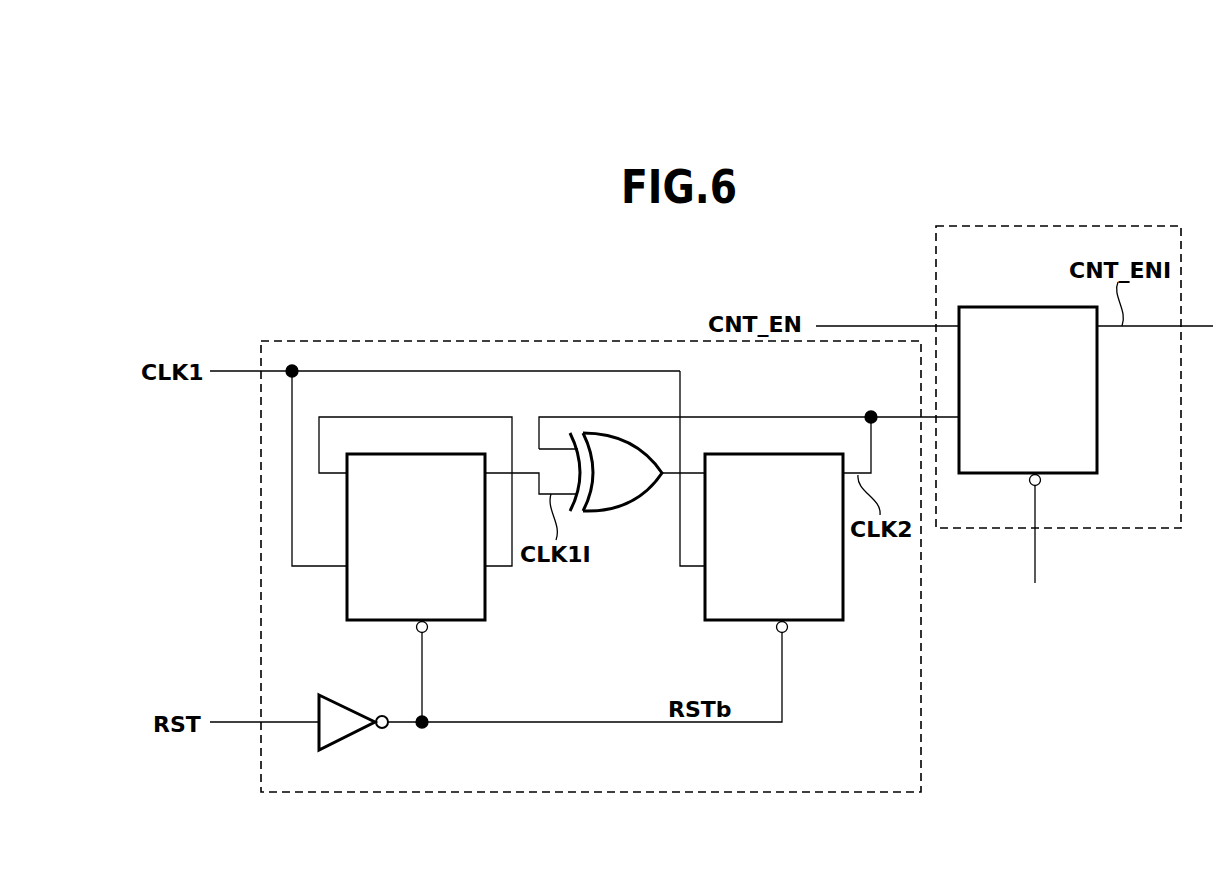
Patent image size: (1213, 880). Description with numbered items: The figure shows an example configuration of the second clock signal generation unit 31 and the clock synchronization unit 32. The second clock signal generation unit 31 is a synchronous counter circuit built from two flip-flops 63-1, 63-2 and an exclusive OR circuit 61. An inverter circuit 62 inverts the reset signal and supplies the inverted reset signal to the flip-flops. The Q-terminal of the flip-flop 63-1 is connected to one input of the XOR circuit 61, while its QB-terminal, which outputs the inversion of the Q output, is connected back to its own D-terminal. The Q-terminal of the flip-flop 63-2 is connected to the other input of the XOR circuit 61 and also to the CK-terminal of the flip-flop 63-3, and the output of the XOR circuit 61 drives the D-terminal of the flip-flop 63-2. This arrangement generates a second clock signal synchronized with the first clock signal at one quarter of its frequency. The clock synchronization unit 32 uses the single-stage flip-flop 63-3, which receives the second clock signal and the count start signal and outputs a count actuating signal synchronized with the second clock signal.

The second clock signal generation unit 31 is at (464, 341).
The clock synchronization unit 32 is at (1112, 528).
The exclusive OR circuit 61 is at (618, 508).
The inverter circuit 62 is at (350, 698).
The flip-flop 63-1 is at (468, 622).
The flip-flop 63-2 is at (828, 622).
The flip-flop 63-3 is at (1003, 307).